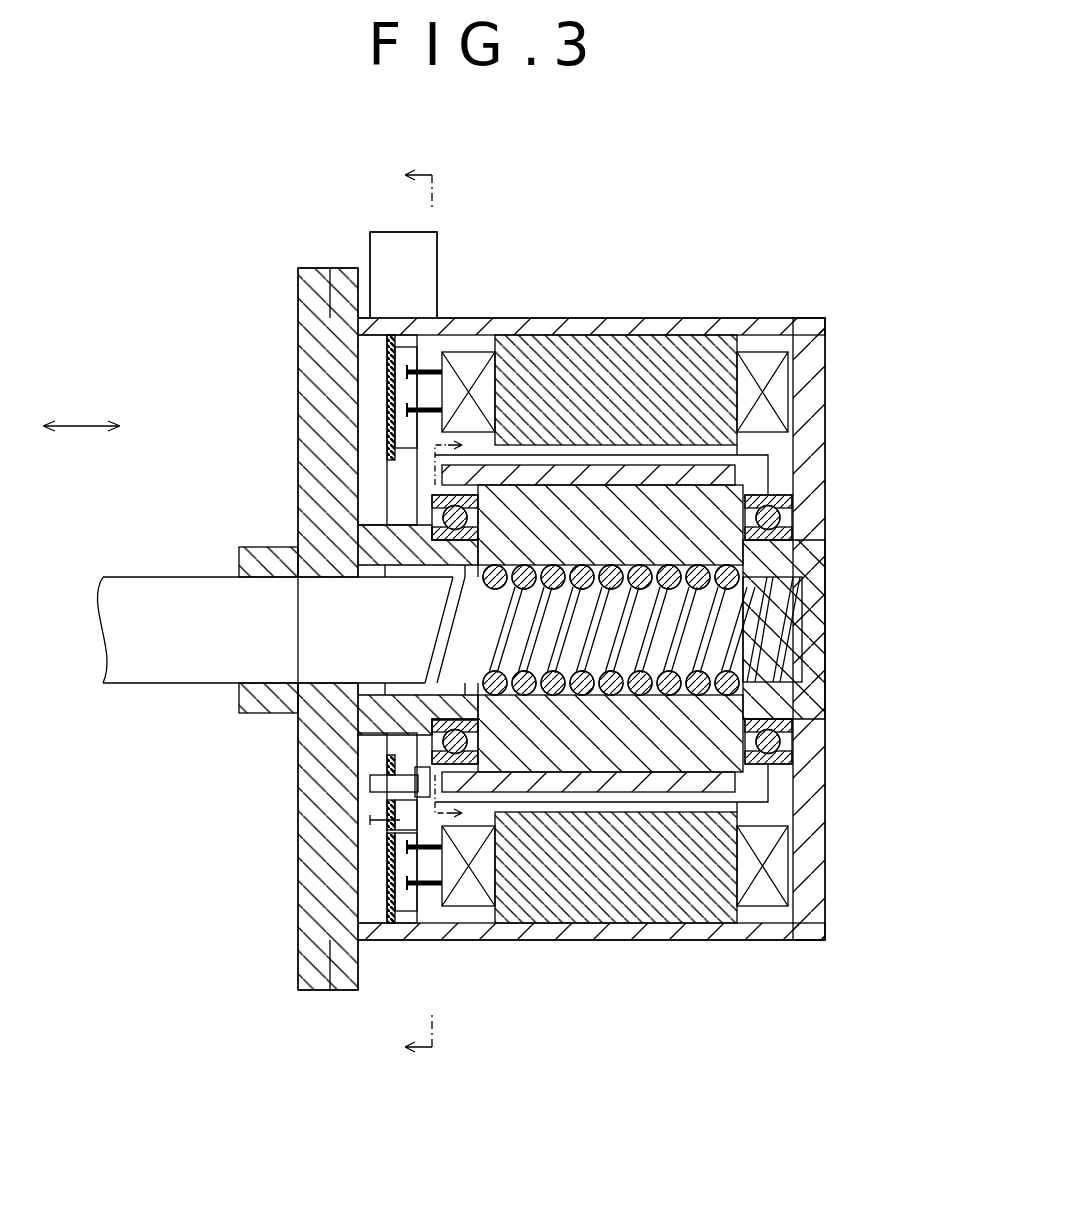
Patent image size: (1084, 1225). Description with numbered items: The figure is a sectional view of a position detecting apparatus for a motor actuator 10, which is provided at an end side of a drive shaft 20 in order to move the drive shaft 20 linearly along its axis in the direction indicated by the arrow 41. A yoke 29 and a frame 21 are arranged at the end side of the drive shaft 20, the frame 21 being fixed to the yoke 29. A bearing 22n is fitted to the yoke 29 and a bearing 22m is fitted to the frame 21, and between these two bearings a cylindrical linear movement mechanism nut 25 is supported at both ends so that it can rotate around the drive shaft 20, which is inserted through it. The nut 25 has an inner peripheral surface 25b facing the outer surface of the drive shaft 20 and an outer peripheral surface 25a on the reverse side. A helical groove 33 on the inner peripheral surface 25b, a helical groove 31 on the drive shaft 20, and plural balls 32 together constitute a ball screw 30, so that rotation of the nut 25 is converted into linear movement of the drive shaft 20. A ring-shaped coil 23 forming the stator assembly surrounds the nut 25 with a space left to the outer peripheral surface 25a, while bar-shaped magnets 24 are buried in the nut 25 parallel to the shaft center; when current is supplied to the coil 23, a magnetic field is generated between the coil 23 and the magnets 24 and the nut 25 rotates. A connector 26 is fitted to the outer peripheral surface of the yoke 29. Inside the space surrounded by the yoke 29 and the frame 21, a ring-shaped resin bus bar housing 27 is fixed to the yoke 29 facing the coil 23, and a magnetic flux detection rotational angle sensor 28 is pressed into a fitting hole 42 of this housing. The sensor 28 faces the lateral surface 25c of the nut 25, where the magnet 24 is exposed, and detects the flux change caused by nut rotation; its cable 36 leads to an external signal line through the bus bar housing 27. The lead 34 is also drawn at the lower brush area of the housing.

The motor actuator 10 is at (826, 257).
The drive shaft 20 is at (135, 632).
The frame 21 is at (317, 360).
The bearing 22m is at (437, 512).
The bearing 22n is at (768, 490).
The coil 23 is at (577, 350).
The magnets 24 is at (684, 475).
The linear movement mechanism nut 25 is at (700, 708).
The outer peripheral surface 25a is at (710, 800).
The inner peripheral surface 25b is at (725, 655).
The lateral surface 25c is at (433, 484).
The connector 26 is at (378, 250).
The bus bar housing 27 is at (393, 392).
The magnetic flux detection rotational angle sensor 28 is at (372, 820).
The yoke 29 is at (810, 403).
The ball screw 30 is at (718, 625).
The groove 31 is at (742, 620).
The balls 32 is at (745, 598).
The groove 33 is at (738, 585).
The lead wire 34 is at (428, 890).
The cable 36 is at (392, 850).
The arrow 41 is at (86, 426).
The fitting hole 42 is at (372, 783).